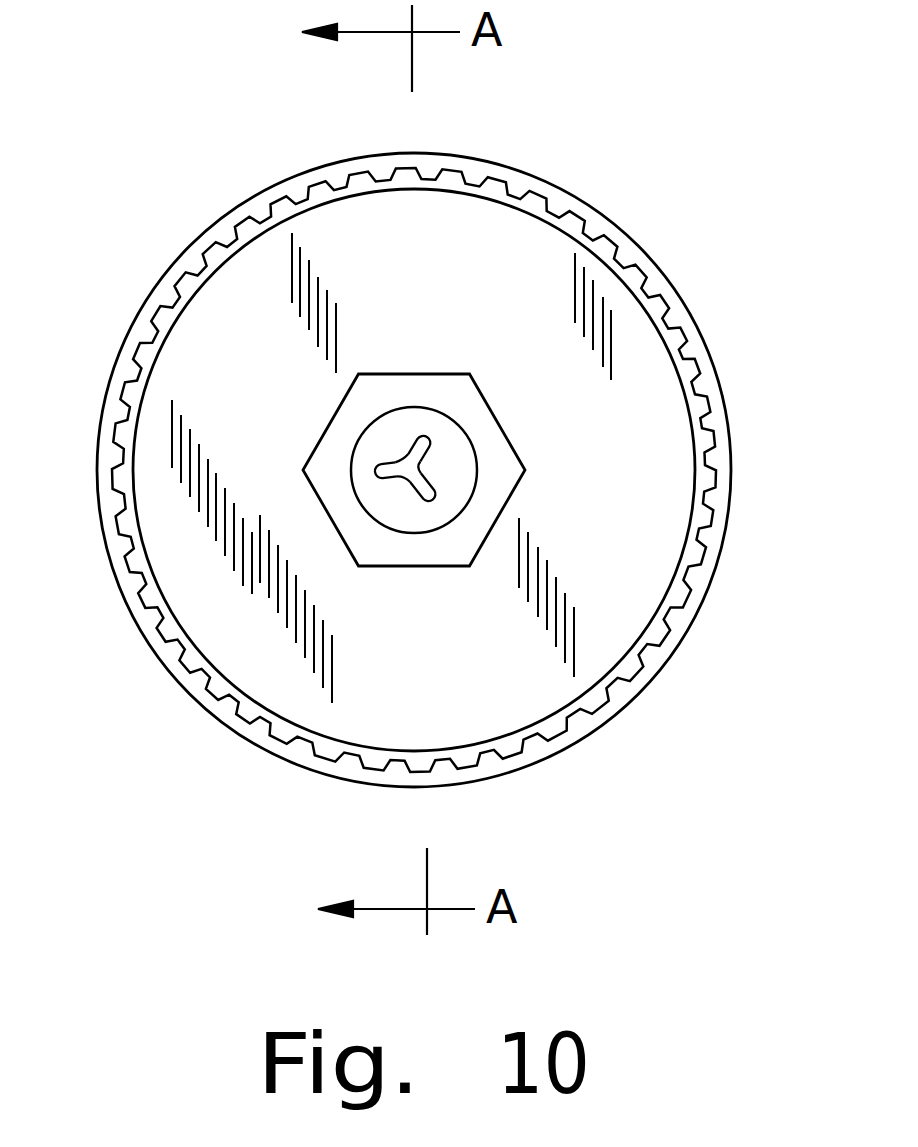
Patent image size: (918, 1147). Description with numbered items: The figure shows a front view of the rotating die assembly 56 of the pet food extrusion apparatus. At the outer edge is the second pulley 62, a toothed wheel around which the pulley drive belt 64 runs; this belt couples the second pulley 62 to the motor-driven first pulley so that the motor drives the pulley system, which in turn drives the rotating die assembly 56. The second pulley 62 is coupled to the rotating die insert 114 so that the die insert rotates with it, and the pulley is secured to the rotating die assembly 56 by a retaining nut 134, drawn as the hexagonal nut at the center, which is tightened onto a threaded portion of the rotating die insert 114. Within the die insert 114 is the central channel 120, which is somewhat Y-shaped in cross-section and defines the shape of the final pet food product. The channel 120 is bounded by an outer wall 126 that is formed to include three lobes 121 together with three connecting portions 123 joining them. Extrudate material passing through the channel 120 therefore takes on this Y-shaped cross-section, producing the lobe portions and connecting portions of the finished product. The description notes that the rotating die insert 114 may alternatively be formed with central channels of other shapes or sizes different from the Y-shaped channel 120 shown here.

The rotating die assembly 56 is at (681, 158).
The second pulley 62 is at (190, 552).
The pulley drive belt 64 is at (303, 750).
The rotating die insert 114 is at (463, 460).
The channel 120 is at (396, 464).
The lobes 121 is at (378, 465).
The connecting portions 123 is at (404, 488).
The outer wall 126 is at (428, 436).
The retaining nut 134 is at (488, 493).